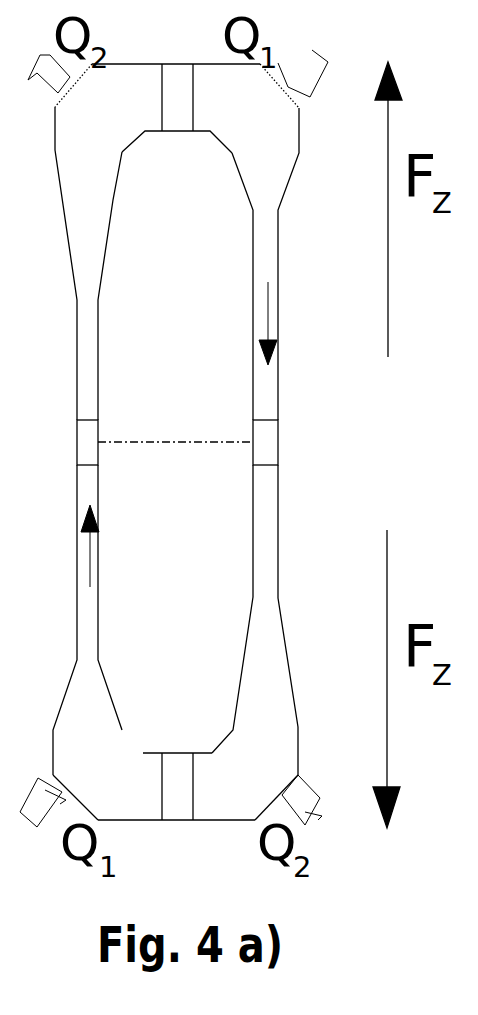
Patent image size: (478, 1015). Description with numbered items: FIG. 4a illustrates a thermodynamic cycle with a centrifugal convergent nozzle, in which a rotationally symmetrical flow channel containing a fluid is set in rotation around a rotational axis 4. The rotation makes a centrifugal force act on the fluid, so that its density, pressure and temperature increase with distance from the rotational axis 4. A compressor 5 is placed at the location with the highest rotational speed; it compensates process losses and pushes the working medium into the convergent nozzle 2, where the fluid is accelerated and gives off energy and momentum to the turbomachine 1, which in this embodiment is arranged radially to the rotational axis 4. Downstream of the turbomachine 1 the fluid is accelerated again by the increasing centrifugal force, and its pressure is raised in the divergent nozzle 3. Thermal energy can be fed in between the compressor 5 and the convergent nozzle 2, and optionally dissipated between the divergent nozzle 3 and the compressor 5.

The turbomachine 1 is at (172, 448).
The convergent nozzle 2 is at (176, 441).
The divergent nozzle 3 is at (176, 441).
The rotational axis 4 is at (175, 451).
The compressor 5 is at (176, 442).